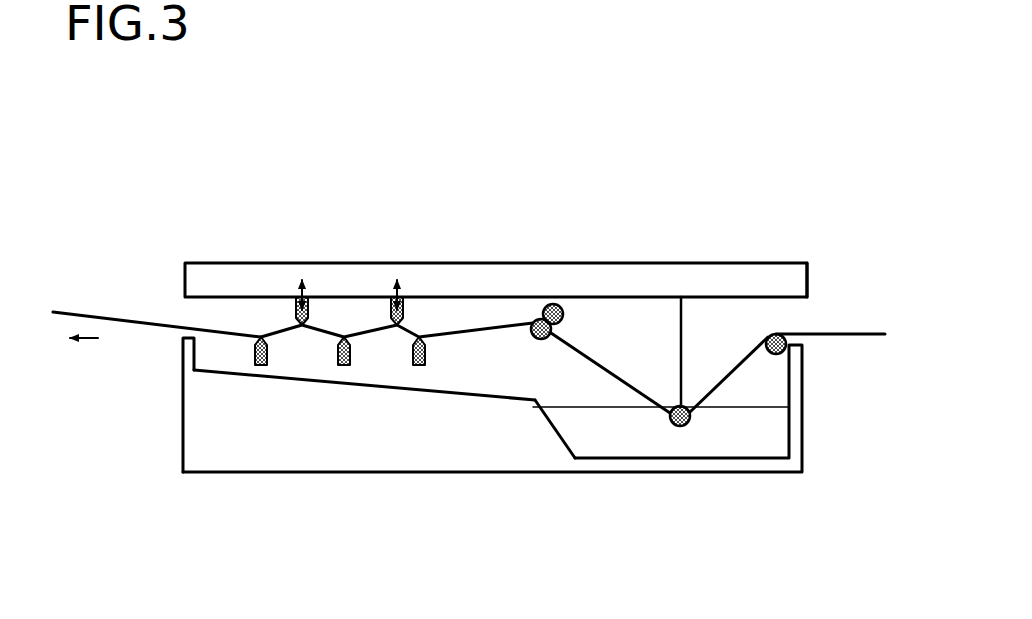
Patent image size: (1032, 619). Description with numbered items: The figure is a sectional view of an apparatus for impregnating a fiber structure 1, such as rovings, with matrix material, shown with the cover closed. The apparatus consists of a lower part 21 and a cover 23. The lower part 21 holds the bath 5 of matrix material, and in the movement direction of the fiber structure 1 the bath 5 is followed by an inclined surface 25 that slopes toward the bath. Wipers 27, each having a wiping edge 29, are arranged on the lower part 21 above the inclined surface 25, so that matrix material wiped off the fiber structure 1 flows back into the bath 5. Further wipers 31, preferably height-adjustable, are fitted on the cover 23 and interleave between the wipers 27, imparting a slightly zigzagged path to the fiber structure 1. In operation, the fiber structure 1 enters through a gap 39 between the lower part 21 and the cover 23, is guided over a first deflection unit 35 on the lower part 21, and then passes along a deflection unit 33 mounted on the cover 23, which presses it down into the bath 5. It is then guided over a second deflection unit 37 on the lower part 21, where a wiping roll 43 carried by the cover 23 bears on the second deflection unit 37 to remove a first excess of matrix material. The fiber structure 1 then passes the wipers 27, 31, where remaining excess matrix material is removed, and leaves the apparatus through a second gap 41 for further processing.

The fiber structure 1 is at (862, 328).
The bath 5 is at (620, 445).
The lower part 21 is at (448, 458).
The cover 23 is at (447, 282).
The inclined surface 25 is at (310, 373).
The wipers 27 is at (345, 375).
The wiping edge 29 is at (261, 337).
The wipers 31 is at (310, 305).
The deflection unit 33 is at (688, 423).
The first deflection unit 35 is at (783, 349).
The second deflection unit 37 is at (535, 318).
The gap 39 is at (793, 317).
The second gap 41 is at (187, 312).
The wiping roll 43 is at (560, 300).